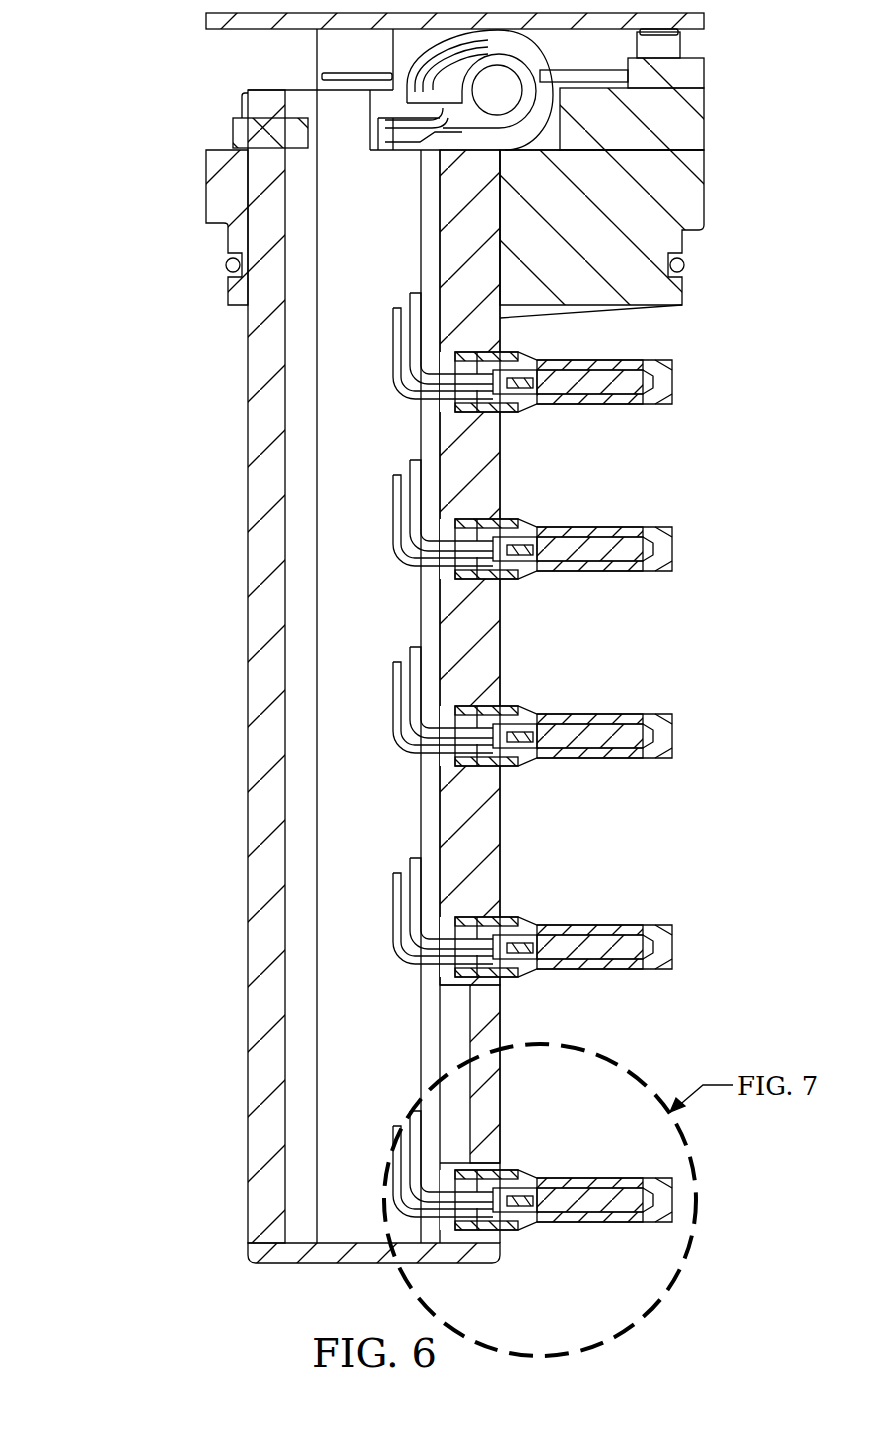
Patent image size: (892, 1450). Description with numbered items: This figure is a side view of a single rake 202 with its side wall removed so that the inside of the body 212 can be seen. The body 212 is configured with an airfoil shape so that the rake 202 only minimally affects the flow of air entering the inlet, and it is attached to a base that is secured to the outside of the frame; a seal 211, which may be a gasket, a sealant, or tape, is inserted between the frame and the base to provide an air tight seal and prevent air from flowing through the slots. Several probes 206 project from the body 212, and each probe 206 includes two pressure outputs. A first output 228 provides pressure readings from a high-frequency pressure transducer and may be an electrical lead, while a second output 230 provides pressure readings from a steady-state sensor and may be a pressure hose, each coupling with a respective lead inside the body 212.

The rake 202 is at (125, 252).
The probe 206 is at (532, 796).
The seal 211 is at (206, 17).
The body 212 is at (248, 737).
The first output 228 is at (424, 1128).
The second output 230 is at (394, 1213).